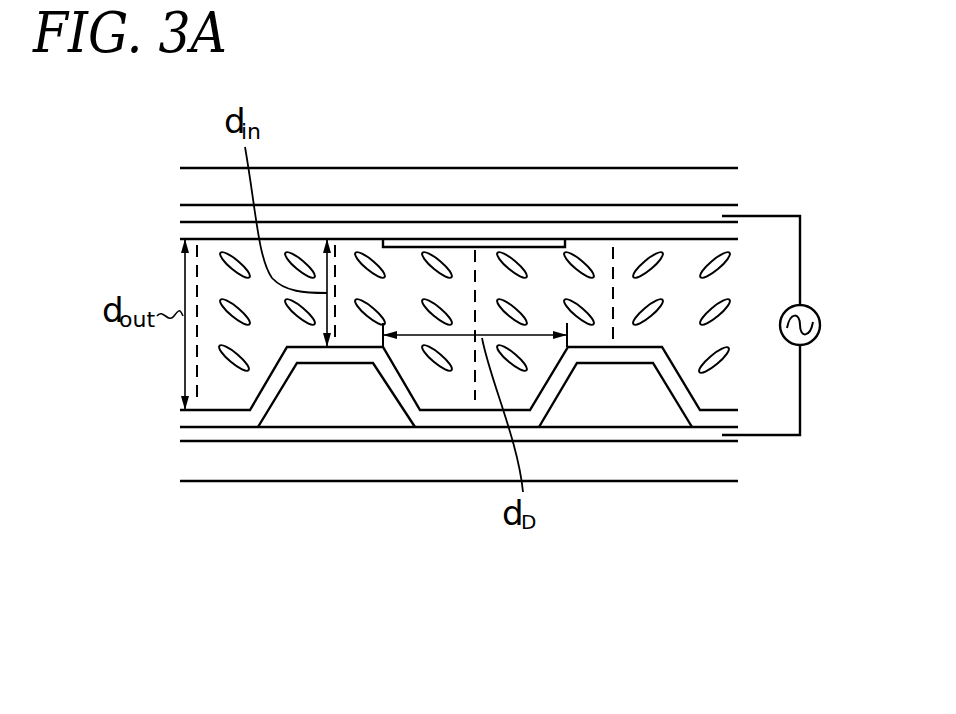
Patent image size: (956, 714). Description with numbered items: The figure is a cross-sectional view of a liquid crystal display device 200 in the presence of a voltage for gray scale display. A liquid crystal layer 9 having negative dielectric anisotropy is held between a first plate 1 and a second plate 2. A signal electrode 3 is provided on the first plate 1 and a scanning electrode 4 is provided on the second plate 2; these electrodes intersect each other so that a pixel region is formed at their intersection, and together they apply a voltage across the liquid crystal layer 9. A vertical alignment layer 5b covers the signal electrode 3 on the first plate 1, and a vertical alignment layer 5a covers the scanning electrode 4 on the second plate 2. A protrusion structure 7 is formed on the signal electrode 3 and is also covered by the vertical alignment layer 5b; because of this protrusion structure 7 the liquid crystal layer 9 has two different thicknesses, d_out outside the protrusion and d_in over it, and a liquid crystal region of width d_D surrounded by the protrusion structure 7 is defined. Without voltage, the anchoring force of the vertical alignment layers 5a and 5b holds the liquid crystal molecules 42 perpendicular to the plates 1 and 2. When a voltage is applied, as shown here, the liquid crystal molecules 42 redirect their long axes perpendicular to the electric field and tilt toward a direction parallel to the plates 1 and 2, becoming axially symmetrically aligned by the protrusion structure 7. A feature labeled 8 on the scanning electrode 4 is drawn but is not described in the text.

The liquid crystal display device 200 is at (760, 117).
The first plate 1 is at (480, 453).
The second plate 2 is at (502, 182).
The signal electrode 3 is at (582, 438).
The scanning electrode 4 is at (397, 212).
The vertical alignment layer 5a is at (342, 232).
The vertical alignment layer 5b is at (228, 420).
The protrusion structure 7 is at (351, 405).
The electrode opening portion 8 is at (462, 240).
The liquid crystal layer 9 is at (678, 253).
The liquid crystal molecules 42 is at (450, 348).